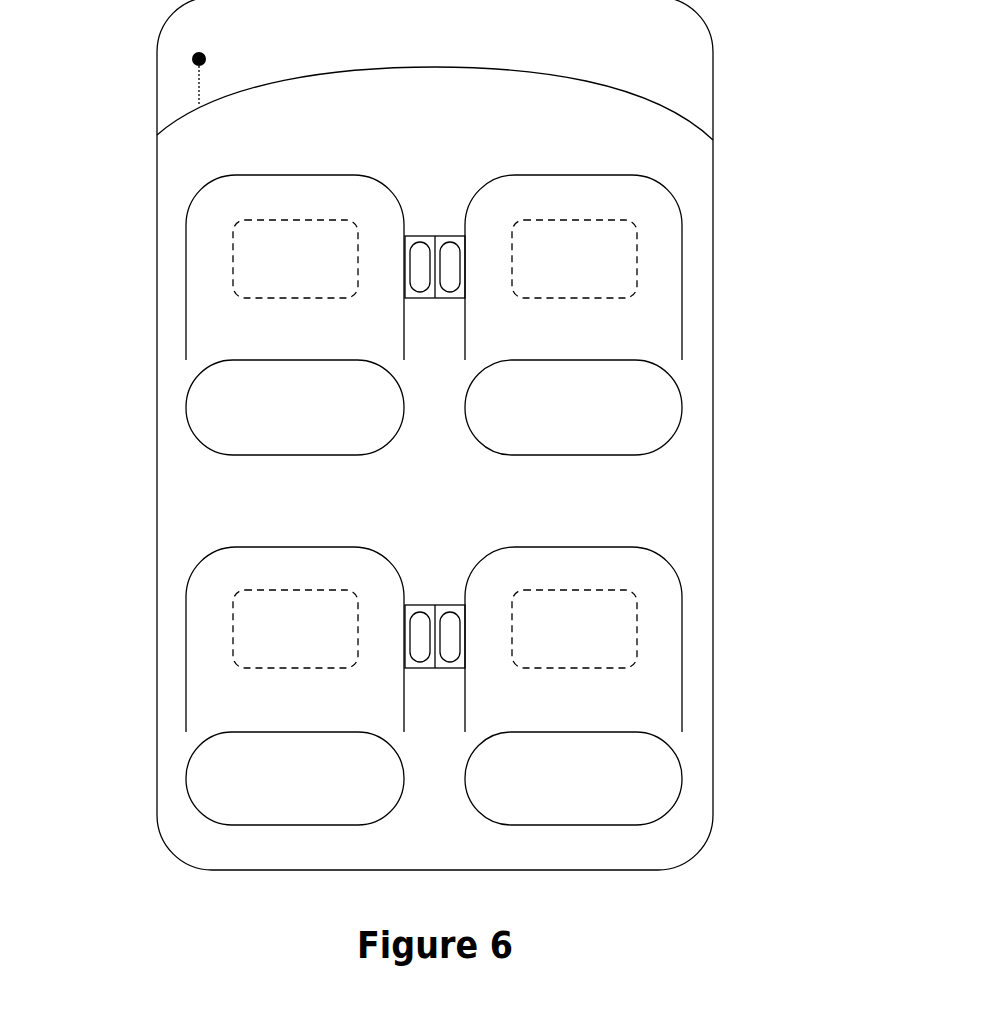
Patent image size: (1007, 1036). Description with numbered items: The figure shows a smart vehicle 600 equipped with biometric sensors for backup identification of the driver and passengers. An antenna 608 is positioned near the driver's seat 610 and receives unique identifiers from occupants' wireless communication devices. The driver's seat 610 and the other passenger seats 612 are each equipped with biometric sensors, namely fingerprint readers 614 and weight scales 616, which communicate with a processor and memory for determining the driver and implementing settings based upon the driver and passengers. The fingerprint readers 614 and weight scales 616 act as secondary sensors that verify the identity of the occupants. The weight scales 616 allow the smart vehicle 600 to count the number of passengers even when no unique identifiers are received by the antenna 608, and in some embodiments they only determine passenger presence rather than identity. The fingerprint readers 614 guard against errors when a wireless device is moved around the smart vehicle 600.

The smart vehicle 600 is at (620, 873).
The antenna 608 is at (199, 97).
The driver's seat 610 is at (186, 262).
The module 612 is at (682, 265).
The fingerprint readers 614 is at (410, 278).
The weight scales 616 is at (298, 220).